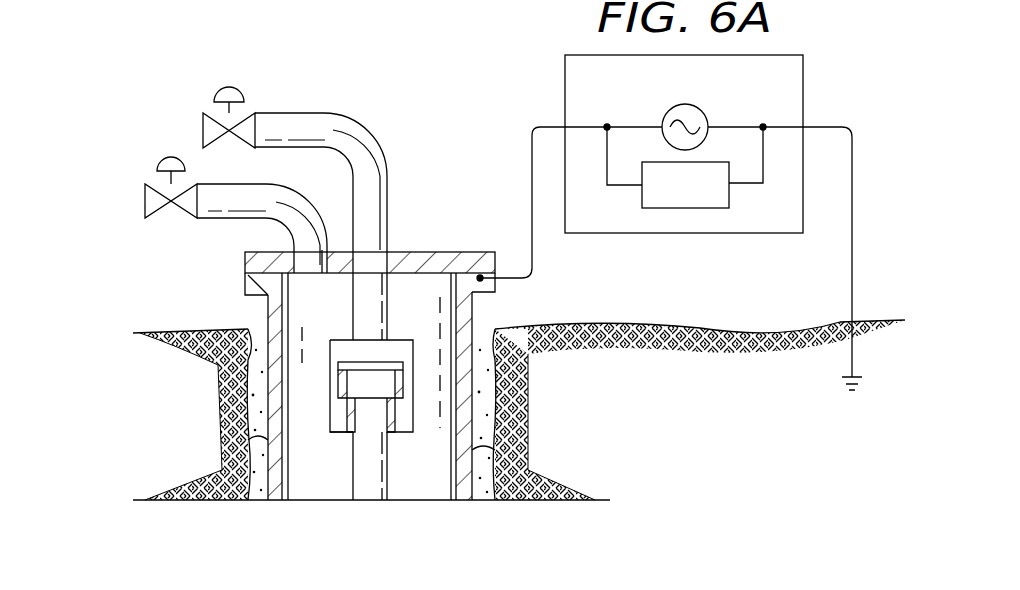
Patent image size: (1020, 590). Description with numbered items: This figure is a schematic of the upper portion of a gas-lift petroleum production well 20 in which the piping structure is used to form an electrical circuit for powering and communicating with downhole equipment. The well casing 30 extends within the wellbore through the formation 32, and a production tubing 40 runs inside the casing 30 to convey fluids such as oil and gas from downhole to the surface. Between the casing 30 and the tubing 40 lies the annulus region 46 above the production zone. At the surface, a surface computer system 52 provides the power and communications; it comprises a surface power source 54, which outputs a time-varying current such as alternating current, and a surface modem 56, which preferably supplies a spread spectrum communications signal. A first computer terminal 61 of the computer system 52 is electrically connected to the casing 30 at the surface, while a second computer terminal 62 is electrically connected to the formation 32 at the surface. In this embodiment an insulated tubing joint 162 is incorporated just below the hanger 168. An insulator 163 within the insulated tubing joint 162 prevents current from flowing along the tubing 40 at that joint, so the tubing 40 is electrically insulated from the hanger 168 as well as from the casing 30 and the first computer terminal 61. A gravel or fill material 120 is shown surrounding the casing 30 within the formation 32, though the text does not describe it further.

The petroleum production well 20 is at (447, 112).
The well casing 30 is at (230, 452).
The formation 32 is at (185, 409).
The production tubing 40 is at (297, 113).
The annulus region 46 is at (330, 314).
The surface computer system 52 is at (803, 100).
The surface power source 54 is at (708, 120).
The surface modem 56 is at (729, 202).
The first computer terminal 61 is at (532, 203).
The second computer terminal 62 is at (852, 213).
The gravel pack 120 is at (262, 503).
The insulated tubing joint 162 is at (330, 352).
The insulator 163 is at (342, 430).
The hanger 168 is at (245, 264).